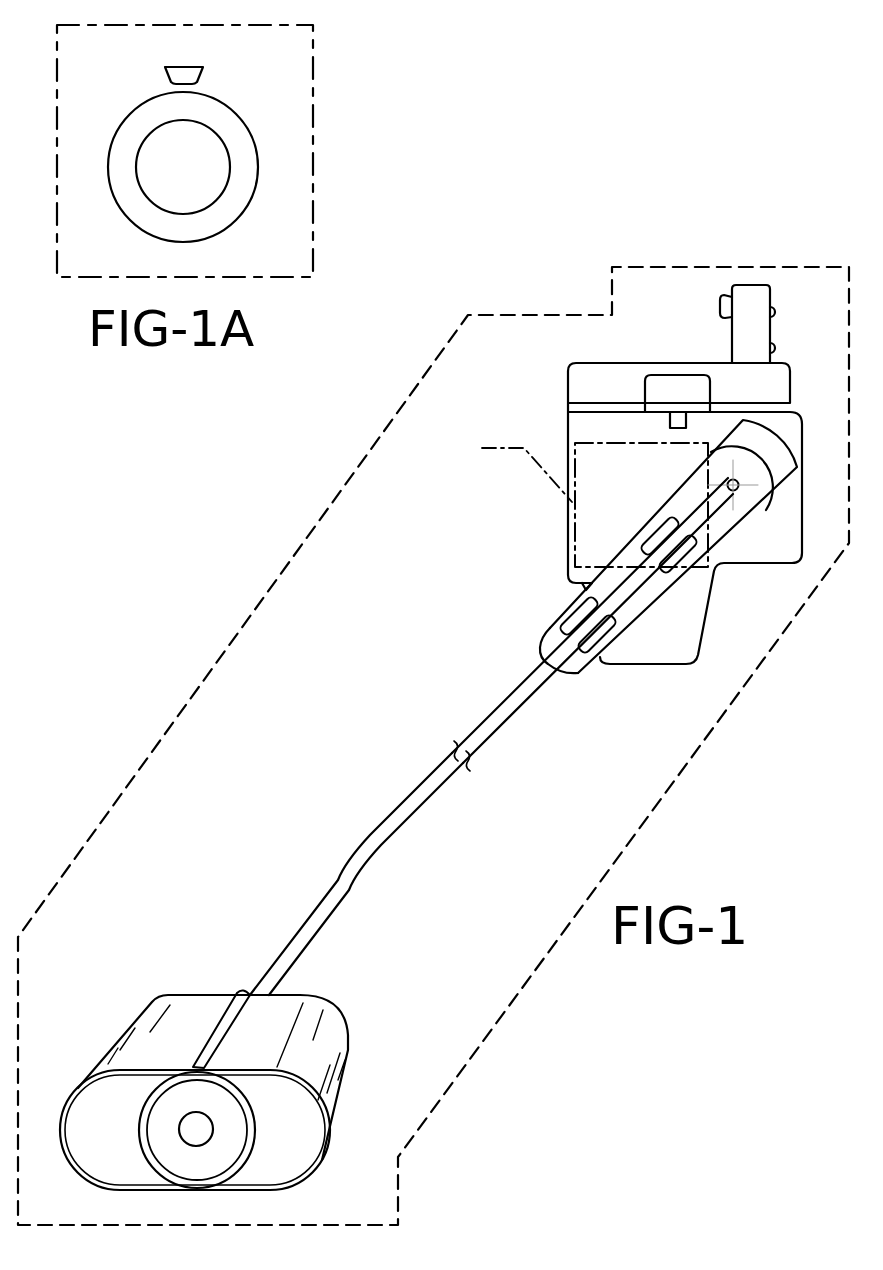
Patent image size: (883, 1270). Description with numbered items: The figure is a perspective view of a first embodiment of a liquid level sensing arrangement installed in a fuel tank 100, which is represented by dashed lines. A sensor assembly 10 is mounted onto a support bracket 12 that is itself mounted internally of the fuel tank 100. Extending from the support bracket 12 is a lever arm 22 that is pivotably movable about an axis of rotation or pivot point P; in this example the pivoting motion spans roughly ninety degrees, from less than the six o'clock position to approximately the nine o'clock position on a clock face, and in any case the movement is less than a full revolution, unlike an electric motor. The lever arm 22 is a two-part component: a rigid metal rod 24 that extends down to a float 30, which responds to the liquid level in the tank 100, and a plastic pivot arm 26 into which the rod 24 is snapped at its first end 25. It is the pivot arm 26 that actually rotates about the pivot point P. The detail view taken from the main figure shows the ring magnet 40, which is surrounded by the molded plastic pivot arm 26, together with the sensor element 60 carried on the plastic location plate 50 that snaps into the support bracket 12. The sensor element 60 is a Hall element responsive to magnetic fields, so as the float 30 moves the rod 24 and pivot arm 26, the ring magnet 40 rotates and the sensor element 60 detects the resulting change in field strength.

In FIG. 1, the sensor assembly 10 is at (543, 342).
In FIG. 1, the support bracket 12 is at (584, 380).
In FIG. 1, the lever arm 22 is at (398, 798).
In FIG. 1, the metal rod 24 is at (370, 840).
In FIG. 1, the first end 25 is at (766, 510).
In FIG. 1, the pivot arm 26 is at (600, 590).
In FIG. 1, the float 30 is at (163, 1007).
In FIG. 1A, the ring magnet 40 is at (150, 120).
In FIG. 1, the location plate 50 is at (788, 427).
In FIG. 1A, the sensor element 60 is at (190, 72).
In FIG. 1, the fuel tank 100 is at (246, 624).
In FIG. 1, the pivot point P is at (727, 480).